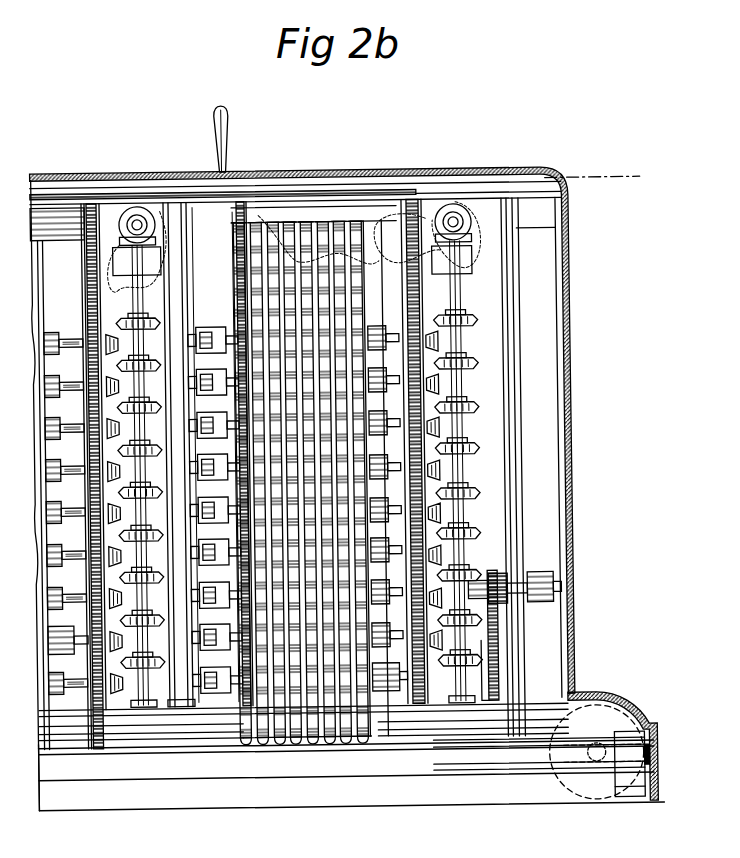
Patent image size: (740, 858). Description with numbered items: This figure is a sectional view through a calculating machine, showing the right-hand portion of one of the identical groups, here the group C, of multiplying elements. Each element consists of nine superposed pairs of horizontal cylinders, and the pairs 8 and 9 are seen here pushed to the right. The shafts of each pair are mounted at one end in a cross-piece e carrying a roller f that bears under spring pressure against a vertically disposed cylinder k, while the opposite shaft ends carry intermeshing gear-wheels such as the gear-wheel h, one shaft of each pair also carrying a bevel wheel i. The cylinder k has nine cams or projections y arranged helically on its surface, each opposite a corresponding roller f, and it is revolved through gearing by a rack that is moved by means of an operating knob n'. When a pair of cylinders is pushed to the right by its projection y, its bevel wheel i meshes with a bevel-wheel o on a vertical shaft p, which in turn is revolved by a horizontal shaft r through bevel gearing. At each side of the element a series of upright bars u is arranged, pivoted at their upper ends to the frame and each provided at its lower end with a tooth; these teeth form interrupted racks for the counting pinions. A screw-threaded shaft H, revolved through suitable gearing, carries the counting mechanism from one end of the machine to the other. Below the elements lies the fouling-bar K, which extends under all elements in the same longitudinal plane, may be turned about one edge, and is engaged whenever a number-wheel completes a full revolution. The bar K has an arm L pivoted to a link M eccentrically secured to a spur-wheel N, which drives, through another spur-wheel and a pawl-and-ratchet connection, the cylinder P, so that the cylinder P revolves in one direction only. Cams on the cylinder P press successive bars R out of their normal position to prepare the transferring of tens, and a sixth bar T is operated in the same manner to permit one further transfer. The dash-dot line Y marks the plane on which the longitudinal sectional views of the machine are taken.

The operating knob n' is at (229, 129).
The horizontal shaft r is at (467, 204).
The section line X— Y is at (591, 163).
The gear-wheel h is at (94, 316).
The pair of horizontal cylinders 8 is at (98, 631).
The bevel wheel i is at (293, 474).
The vertical shaft p is at (476, 422).
The bevel-wheel o is at (484, 572).
The cylinder k is at (180, 587).
The cams or projections y is at (176, 457).
The roller f is at (188, 777).
The cross-piece e is at (215, 455).
The group C is at (228, 454).
The screw-threaded shaft H is at (317, 500).
The upright bars u is at (318, 739).
The pair of horizontal cylinders 9 is at (395, 467).
The cylinder P is at (541, 574).
The spur-wheel N is at (510, 682).
The bars R is at (523, 740).
The fouling-bar K is at (438, 712).
The link M is at (478, 665).
The arm L is at (492, 704).
The sixth bar T is at (562, 722).